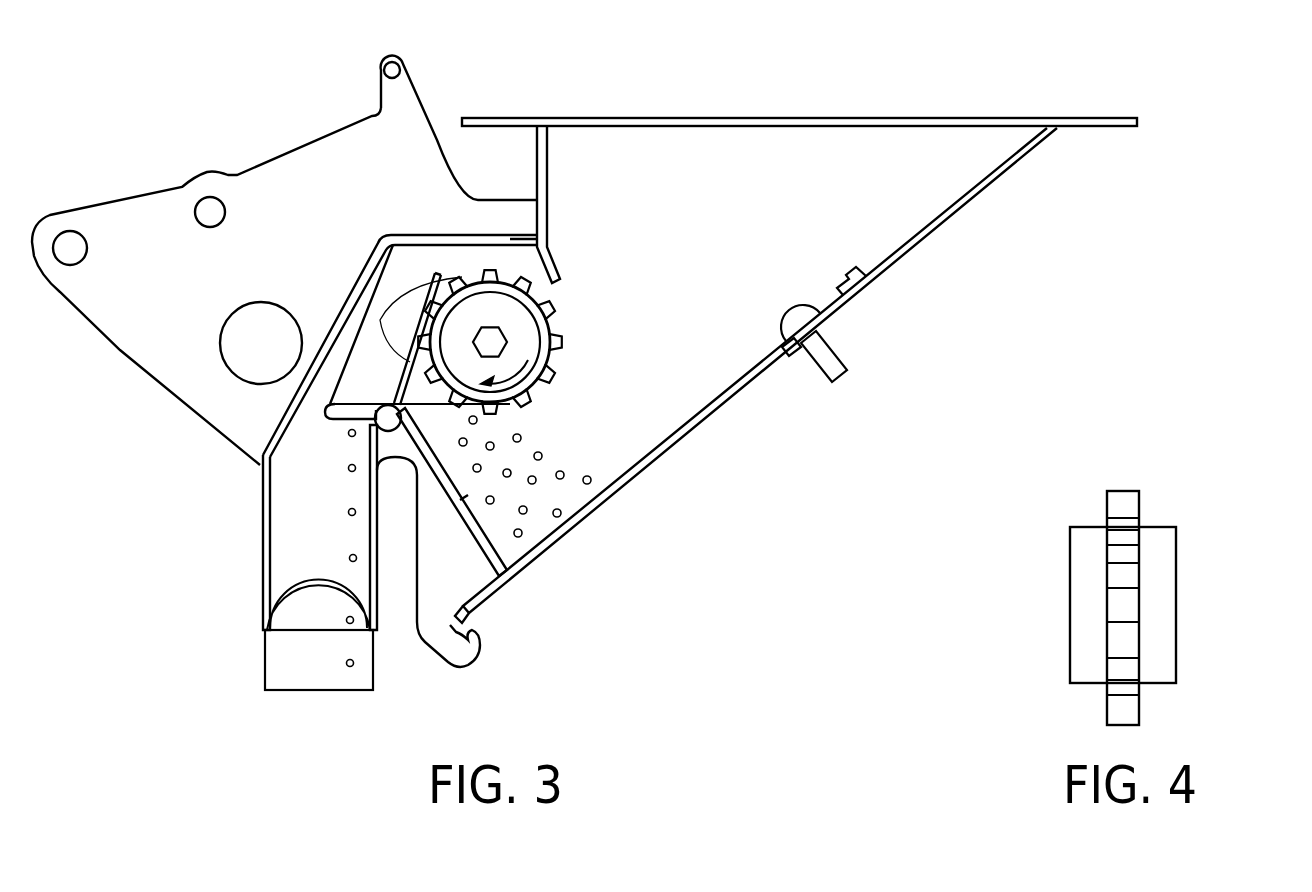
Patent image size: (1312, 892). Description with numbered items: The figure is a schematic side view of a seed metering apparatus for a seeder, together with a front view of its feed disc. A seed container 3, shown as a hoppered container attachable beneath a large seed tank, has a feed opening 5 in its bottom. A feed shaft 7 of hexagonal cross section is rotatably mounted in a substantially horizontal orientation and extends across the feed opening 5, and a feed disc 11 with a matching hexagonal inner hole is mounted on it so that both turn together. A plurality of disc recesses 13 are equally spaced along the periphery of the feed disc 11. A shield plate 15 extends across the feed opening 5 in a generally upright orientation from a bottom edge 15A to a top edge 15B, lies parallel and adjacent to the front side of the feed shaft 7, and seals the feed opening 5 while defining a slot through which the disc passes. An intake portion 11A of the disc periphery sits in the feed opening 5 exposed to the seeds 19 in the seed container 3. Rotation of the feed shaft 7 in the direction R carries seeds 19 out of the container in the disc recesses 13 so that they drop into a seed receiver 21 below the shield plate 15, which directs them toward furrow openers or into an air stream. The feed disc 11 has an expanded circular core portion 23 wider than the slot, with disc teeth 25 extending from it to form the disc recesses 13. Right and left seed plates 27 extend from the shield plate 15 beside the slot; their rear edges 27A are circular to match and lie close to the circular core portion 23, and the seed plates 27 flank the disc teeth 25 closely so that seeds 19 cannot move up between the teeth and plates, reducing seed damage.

In FIG. 3, the seed container 3 is at (955, 215).
In FIG. 3, the feed opening 5 is at (668, 346).
In FIG. 3, the feed shaft 7 is at (508, 340).
In FIG. 3, the feed disc 11 is at (537, 238).
In FIG. 4, the feed disc 11 is at (1070, 617).
In FIG. 3, the intake portion 11A is at (565, 341).
In FIG. 3, the disc recesses 13 is at (513, 414).
In FIG. 3, the shield plate 15 is at (410, 362).
In FIG. 3, the bottom edge 15A is at (330, 405).
In FIG. 3, the top edge 15B is at (443, 268).
In FIG. 3, the seeds 19 is at (346, 665).
In FIG. 3, the seed receiver 21 is at (262, 578).
In FIG. 3, the circular core portion 23 is at (540, 286).
In FIG. 4, the circular core portion 23 is at (1177, 535).
In FIG. 3, the disc teeth 25 is at (555, 382).
In FIG. 4, the disc teeth 25 is at (1135, 491).
In FIG. 3, the seed plates 27 is at (447, 400).
In FIG. 3, the rear edges 27A is at (410, 420).
In FIG. 3, the direction of rotation R is at (533, 390).